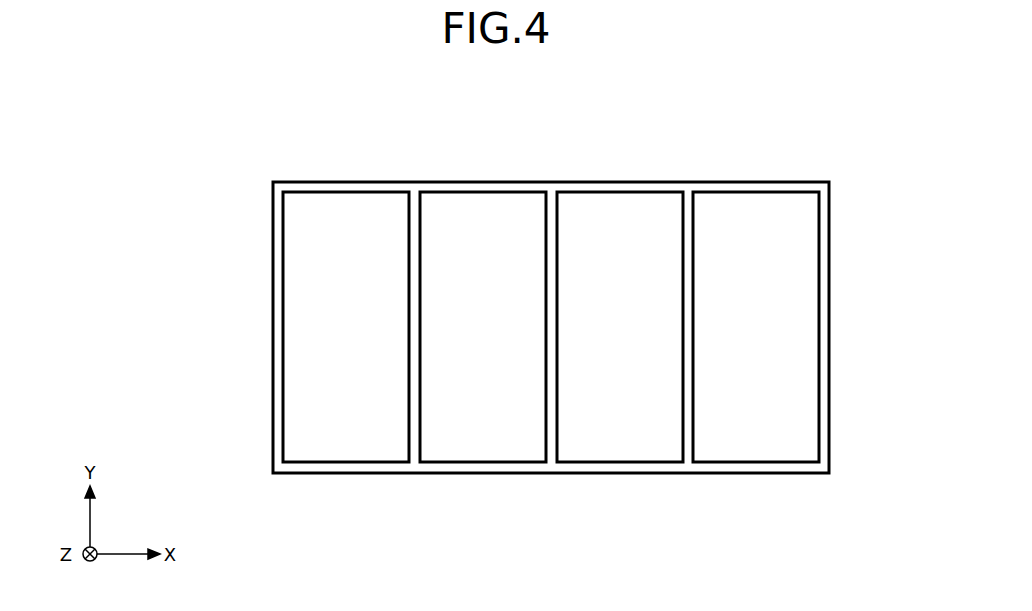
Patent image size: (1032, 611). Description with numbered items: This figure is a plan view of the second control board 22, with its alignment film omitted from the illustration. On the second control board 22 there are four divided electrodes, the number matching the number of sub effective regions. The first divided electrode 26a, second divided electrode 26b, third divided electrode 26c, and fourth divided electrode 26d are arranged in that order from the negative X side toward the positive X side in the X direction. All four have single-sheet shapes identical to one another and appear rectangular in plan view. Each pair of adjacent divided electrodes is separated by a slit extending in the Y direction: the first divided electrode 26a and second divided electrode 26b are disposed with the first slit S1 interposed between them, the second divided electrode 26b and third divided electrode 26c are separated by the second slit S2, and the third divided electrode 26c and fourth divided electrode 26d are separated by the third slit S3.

The second control board 22 is at (827, 285).
The first divided electrode 26a is at (344, 192).
The second divided electrode 26b is at (480, 192).
The third divided electrode 26c is at (616, 192).
The fourth divided electrode 26d is at (752, 192).
The first slit S1 is at (414, 198).
The second slit S2 is at (551, 198).
The third slit S3 is at (688, 198).